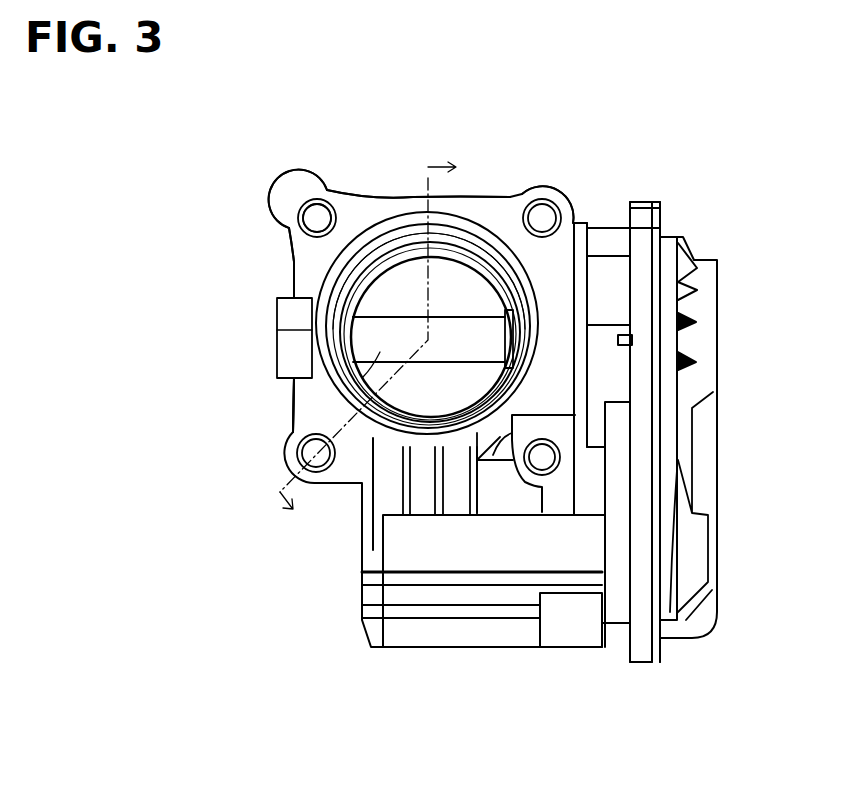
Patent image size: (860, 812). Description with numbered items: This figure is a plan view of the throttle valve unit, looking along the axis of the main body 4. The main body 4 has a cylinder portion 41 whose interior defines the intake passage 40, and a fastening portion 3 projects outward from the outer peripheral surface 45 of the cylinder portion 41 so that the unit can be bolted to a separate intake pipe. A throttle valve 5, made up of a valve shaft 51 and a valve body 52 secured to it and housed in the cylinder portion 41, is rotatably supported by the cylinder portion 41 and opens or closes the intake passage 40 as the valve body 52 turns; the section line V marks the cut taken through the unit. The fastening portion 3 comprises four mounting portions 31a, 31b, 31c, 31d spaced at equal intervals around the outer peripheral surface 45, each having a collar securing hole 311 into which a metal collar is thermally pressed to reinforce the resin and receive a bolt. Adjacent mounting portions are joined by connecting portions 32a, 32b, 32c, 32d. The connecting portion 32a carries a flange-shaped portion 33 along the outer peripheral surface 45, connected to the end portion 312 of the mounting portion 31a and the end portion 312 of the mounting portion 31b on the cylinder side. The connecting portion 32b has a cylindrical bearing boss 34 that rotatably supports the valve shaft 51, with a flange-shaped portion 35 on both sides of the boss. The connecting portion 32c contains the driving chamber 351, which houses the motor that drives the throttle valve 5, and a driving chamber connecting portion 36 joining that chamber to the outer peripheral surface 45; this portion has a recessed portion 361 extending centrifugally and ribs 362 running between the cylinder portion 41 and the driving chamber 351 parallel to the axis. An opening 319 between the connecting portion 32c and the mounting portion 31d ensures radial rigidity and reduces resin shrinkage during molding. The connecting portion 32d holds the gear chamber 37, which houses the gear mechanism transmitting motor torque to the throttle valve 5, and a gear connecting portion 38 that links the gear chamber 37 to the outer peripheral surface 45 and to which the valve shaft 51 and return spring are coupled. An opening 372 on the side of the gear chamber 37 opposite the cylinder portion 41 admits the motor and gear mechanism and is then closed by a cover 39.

The fastening portion 3 is at (610, 273).
The main body 4 is at (386, 230).
The intake passage 40 is at (462, 283).
The outer peripheral surface 45 is at (362, 243).
The throttle valve 5 is at (380, 352).
The valve shaft 51 is at (340, 380).
The valve body 52 is at (397, 299).
The section line V- V is at (356, 334).
The mounting portion 31a is at (553, 197).
The mounting portion 31b is at (297, 198).
The mounting portion 31c is at (287, 452).
The mounting portion 31d is at (525, 432).
The collar securing hole 311 is at (307, 223).
The end portion 312 is at (300, 196).
The opening 319 is at (493, 448).
The connecting portion 32a is at (420, 199).
The connecting portion 32b is at (312, 412).
The connecting portion 32c is at (453, 472).
The connecting portion 32d is at (570, 360).
The flange-shaped portion 33 is at (503, 213).
The bearing boss 34 is at (293, 350).
The flange-shaped portion 35 is at (313, 260).
The driving chamber 351 is at (398, 594).
The driving chamber connecting portion 36 is at (465, 498).
The recessed portion 361 is at (403, 467).
The ribs 362 is at (403, 497).
The gear chamber 37 is at (640, 333).
The opening 372 is at (650, 589).
The gear connecting portion 38 is at (590, 290).
The cover 39 is at (703, 452).
The cylinder portion 41 is at (367, 347).